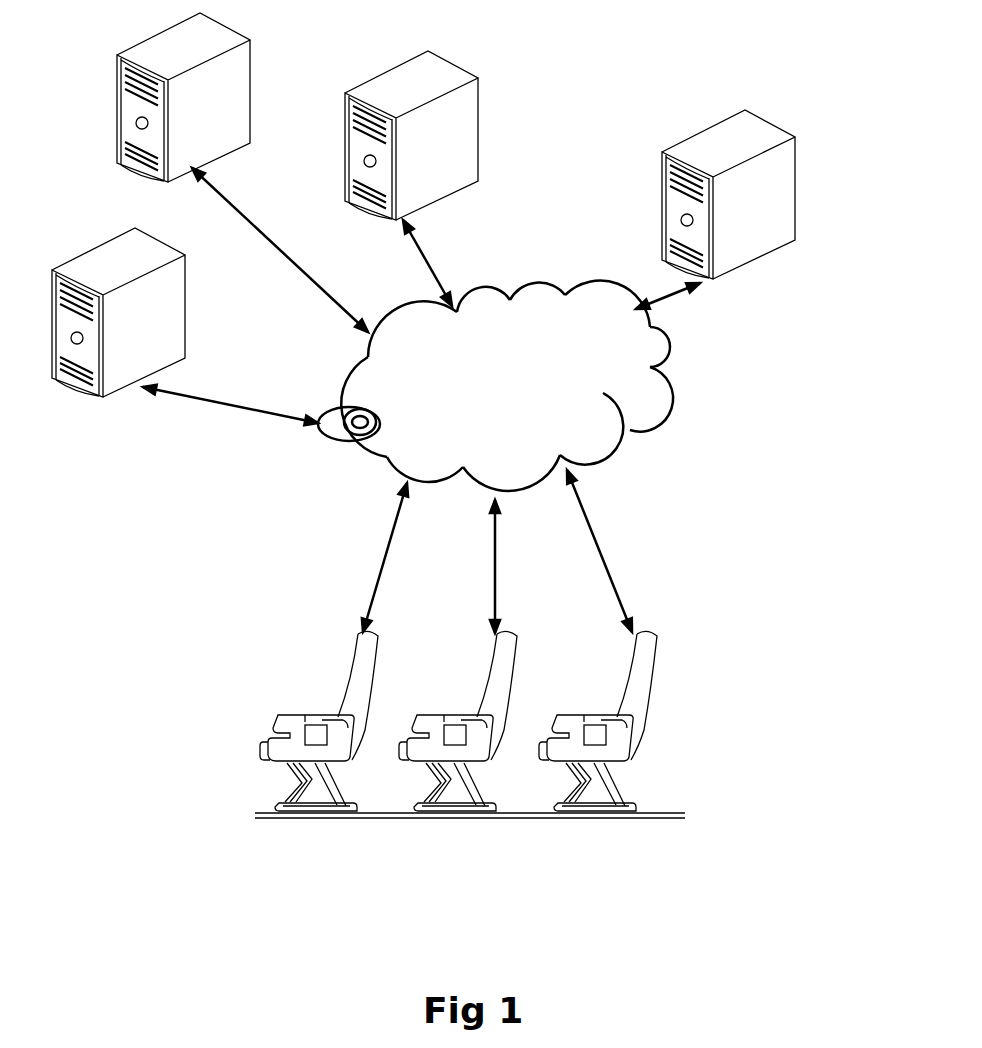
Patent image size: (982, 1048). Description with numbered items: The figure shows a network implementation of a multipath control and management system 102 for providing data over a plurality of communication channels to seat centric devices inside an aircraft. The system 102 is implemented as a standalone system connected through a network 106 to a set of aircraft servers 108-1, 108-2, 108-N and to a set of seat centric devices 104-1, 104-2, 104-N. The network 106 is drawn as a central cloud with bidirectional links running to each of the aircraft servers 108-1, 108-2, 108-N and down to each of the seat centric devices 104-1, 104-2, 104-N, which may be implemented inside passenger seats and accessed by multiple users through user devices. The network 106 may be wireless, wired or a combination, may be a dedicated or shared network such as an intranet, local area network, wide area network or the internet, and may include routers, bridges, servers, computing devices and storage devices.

The multipath control and management system 102 is at (795, 133).
The seat centric device 104-1 is at (345, 782).
The seat centric device 104-2 is at (473, 780).
The seat centric device 104-N is at (608, 763).
The network 106 is at (478, 394).
The aircraft server 108-1 is at (185, 253).
The aircraft server 108-2 is at (250, 40).
The aircraft server 108-N is at (477, 78).